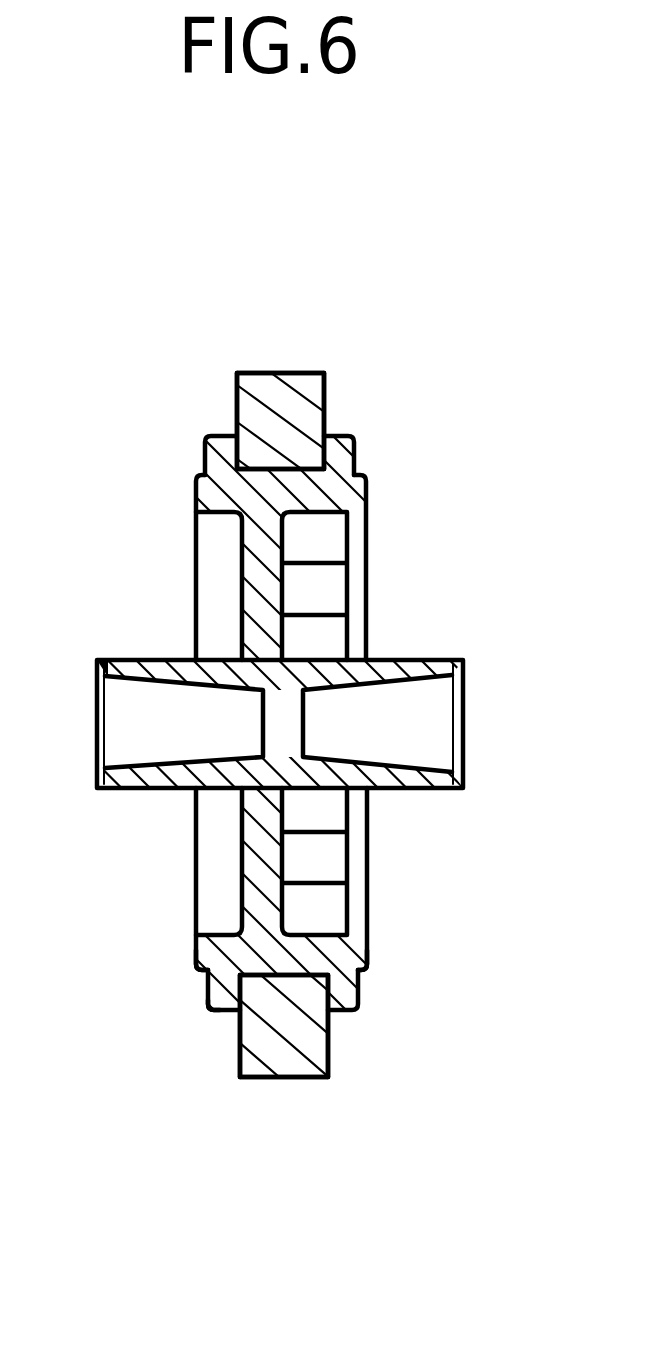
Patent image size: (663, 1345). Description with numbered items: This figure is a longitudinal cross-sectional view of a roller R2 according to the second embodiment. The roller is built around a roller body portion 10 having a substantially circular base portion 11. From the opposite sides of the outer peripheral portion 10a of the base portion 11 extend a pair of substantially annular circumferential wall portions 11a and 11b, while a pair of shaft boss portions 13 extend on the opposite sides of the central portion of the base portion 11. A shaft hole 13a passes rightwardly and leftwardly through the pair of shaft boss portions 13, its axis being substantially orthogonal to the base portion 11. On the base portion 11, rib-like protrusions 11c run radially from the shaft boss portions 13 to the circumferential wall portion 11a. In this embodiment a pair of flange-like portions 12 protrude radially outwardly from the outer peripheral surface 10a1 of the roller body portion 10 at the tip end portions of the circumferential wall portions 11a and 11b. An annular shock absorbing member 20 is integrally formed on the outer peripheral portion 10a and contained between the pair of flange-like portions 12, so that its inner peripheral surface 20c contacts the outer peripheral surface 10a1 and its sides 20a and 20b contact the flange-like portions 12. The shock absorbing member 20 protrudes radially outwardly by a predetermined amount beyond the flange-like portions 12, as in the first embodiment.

The roller body portion 10 is at (245, 827).
The outer peripheral portion 10a is at (313, 468).
The outer peripheral surface 10a1 is at (348, 731).
The base portion 11 is at (243, 880).
The circumferential wall portion 11a is at (352, 960).
The circumferential wall portion 11b is at (217, 943).
The rib-like protrusion 11c is at (325, 552).
The flange-like portion 12 is at (220, 457).
The shaft boss portion 13 is at (109, 661).
The shaft hole 13a is at (420, 743).
The shock absorbing member 20 is at (260, 372).
The side of the shock absorbing member 20a is at (326, 407).
The side of the shock absorbing member 20b is at (237, 417).
The inner peripheral surface 20c is at (257, 475).
The roller R2 is at (206, 1014).